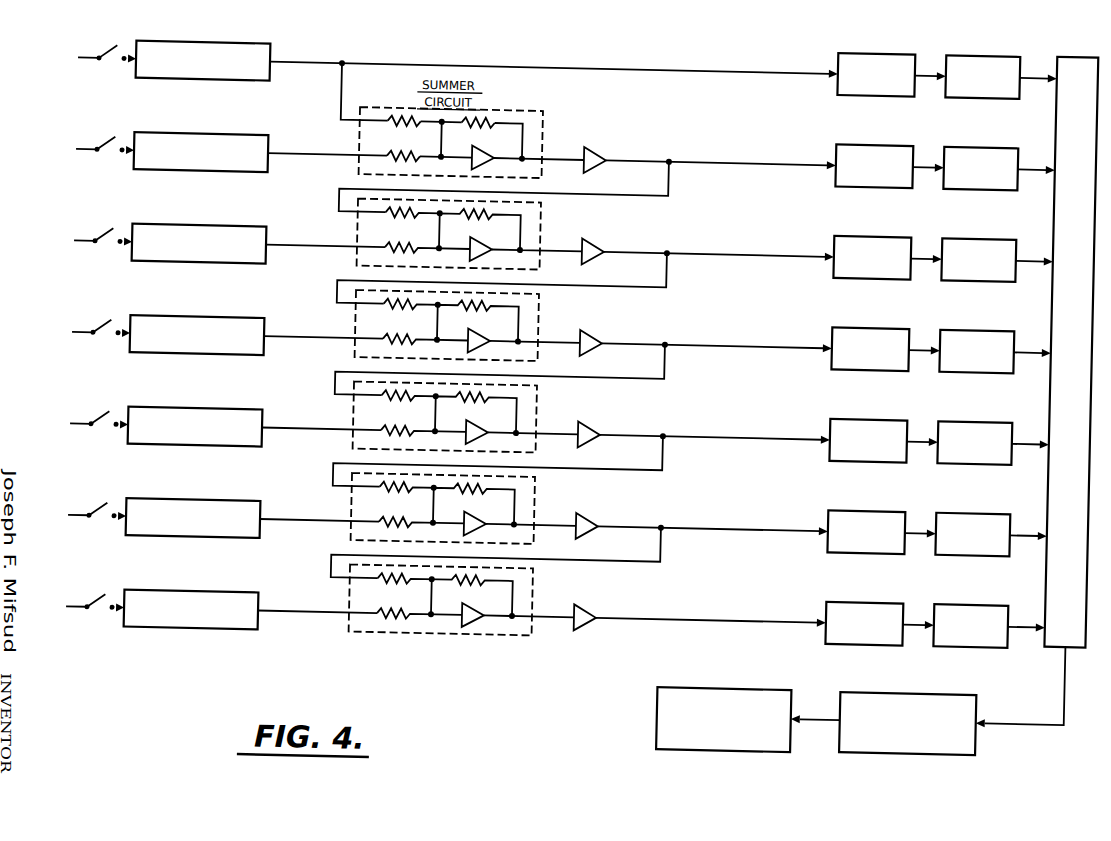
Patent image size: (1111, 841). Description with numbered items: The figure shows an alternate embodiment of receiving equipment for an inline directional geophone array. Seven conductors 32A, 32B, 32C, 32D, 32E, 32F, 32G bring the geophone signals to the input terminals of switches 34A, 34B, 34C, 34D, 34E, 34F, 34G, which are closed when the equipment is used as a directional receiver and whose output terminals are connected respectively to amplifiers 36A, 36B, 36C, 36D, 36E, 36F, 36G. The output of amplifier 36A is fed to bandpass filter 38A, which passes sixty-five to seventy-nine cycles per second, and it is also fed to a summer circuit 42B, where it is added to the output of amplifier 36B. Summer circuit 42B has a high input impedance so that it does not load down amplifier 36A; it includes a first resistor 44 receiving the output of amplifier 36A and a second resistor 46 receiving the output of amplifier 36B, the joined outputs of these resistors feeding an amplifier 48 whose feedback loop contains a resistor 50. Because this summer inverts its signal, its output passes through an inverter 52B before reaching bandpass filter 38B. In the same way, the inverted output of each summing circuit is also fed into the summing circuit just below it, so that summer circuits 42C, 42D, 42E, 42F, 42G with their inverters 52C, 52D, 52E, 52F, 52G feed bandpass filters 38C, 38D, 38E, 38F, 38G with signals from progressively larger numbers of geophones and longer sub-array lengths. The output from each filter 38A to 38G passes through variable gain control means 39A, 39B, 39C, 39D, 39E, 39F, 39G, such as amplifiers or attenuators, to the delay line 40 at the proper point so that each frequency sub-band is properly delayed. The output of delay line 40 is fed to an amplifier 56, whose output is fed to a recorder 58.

The conductor 32A is at (78, 69).
The conductor 32B is at (100, 167).
The conductor 32C is at (98, 258).
The conductor 32D is at (96, 350).
The conductor 32E is at (93, 441).
The conductor 32F is at (91, 533).
The conductor 32G is at (91, 624).
The switch 34A is at (111, 52).
The switch 34B is at (92, 128).
The switch 34C is at (90, 219).
The switch 34D is at (88, 311).
The switch 34E is at (86, 402).
The switch 34F is at (84, 494).
The switch 34G is at (82, 585).
The amplifier 36A is at (188, 50).
The amplifier 36B is at (201, 137).
The amplifier 36C is at (199, 229).
The amplifier 36D is at (197, 320).
The amplifier 36E is at (195, 412).
The amplifier 36F is at (193, 503).
The amplifier 36G is at (191, 595).
The bandpass filter 38A is at (852, 47).
The bandpass filter 38B is at (874, 157).
The bandpass filter 38C is at (872, 249).
The bandpass filter 38D is at (870, 340).
The bandpass filter 38E is at (868, 432).
The bandpass filter 38F is at (866, 523).
The bandpass filter 38G is at (864, 615).
The variable gain control means 39A is at (958, 47).
The variable gain control means 39B is at (980, 160).
The variable gain control means 39C is at (978, 251).
The variable gain control means 39D is at (976, 343).
The variable gain control means 39E is at (974, 434).
The variable gain control means 39F is at (972, 526).
The variable gain control means 39G is at (970, 617).
The delay line 40 is at (1076, 52).
The summer circuit 42B is at (473, 127).
The summer circuit 42C is at (476, 227).
The summer circuit 42D is at (475, 318).
The summer circuit 42E is at (472, 410).
The summer circuit 42F is at (469, 501).
The summer circuit 42G is at (469, 592).
The first resistor 44 is at (386, 101).
The second resistor 46 is at (392, 146).
The amplifier 48 is at (492, 152).
The resistor 50 is at (498, 105).
The inverter 52B is at (615, 152).
The inverter 52C is at (613, 243).
The inverter 52D is at (612, 335).
The inverter 52E is at (609, 426).
The inverter 52F is at (606, 518).
The inverter 52G is at (606, 609).
The amplifier 56 is at (922, 686).
The recorder 58 is at (742, 685).